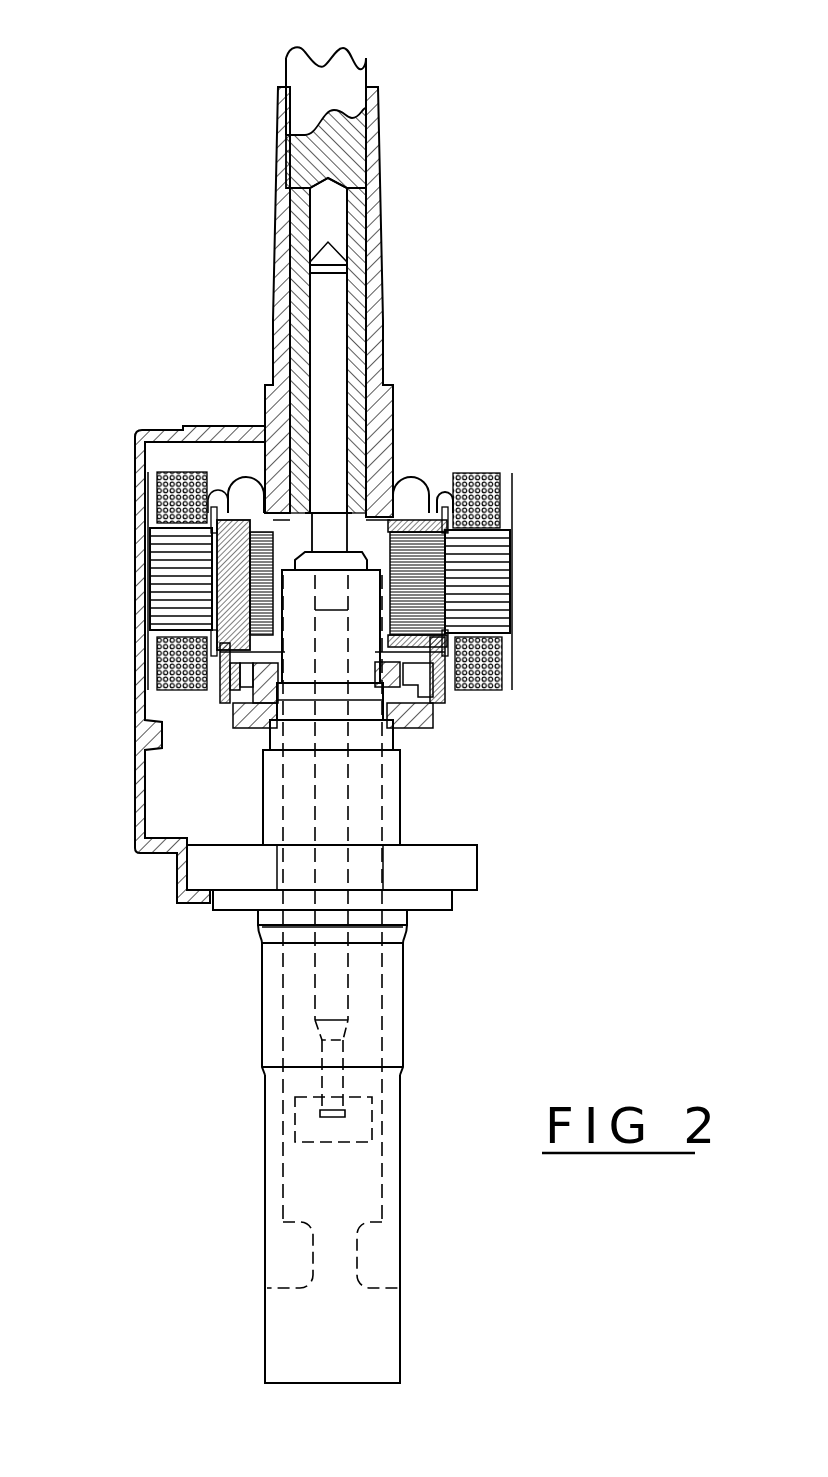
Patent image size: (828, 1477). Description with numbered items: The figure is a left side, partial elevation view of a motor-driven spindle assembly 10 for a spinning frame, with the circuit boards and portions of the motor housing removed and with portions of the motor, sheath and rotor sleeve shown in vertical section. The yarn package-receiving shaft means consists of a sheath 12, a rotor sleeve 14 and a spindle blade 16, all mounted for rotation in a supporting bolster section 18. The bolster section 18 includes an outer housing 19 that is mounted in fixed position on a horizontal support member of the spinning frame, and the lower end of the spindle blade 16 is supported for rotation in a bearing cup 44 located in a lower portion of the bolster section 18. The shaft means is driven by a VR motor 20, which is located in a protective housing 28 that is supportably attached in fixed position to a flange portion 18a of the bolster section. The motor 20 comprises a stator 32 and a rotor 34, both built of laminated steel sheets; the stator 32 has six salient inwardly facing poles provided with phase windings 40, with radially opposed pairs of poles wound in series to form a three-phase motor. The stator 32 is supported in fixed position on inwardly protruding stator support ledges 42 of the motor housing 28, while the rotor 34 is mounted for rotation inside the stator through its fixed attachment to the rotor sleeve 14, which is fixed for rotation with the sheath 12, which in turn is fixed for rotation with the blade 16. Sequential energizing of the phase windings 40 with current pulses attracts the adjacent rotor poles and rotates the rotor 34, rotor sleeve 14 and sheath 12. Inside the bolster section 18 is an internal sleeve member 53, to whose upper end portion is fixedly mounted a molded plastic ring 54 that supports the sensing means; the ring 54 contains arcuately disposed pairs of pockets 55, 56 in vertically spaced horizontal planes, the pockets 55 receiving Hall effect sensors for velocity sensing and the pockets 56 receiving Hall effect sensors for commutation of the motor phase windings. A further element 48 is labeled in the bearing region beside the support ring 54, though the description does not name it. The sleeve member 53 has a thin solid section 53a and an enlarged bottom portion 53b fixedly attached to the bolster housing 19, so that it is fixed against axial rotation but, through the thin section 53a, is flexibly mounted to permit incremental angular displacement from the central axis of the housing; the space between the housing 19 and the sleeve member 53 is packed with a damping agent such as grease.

The spindle assembly 10 is at (495, 424).
The sheath 12 is at (328, 78).
The rotor sleeve 14 is at (380, 337).
The spindle blade 16 is at (322, 328).
The bolster section 18 is at (406, 978).
The flange portion 18a is at (468, 868).
The outer housing 19 is at (260, 1012).
The VR motor 20 is at (323, 598).
The protective housing 28 is at (135, 770).
The stator 32 is at (510, 597).
The rotor 34 is at (425, 513).
The phase windings 40 is at (500, 490).
The stator support ledges 42 is at (145, 518).
The bearing cup 44 is at (355, 1127).
The bearing 48 is at (218, 702).
The internal sleeve member 53 is at (298, 590).
The thin solid section 53a is at (313, 1255).
The enlarged bottom portion 53b is at (363, 1333).
The molded plastic ring 54 is at (238, 733).
The pockets 55 is at (217, 688).
The pockets 56 is at (415, 703).